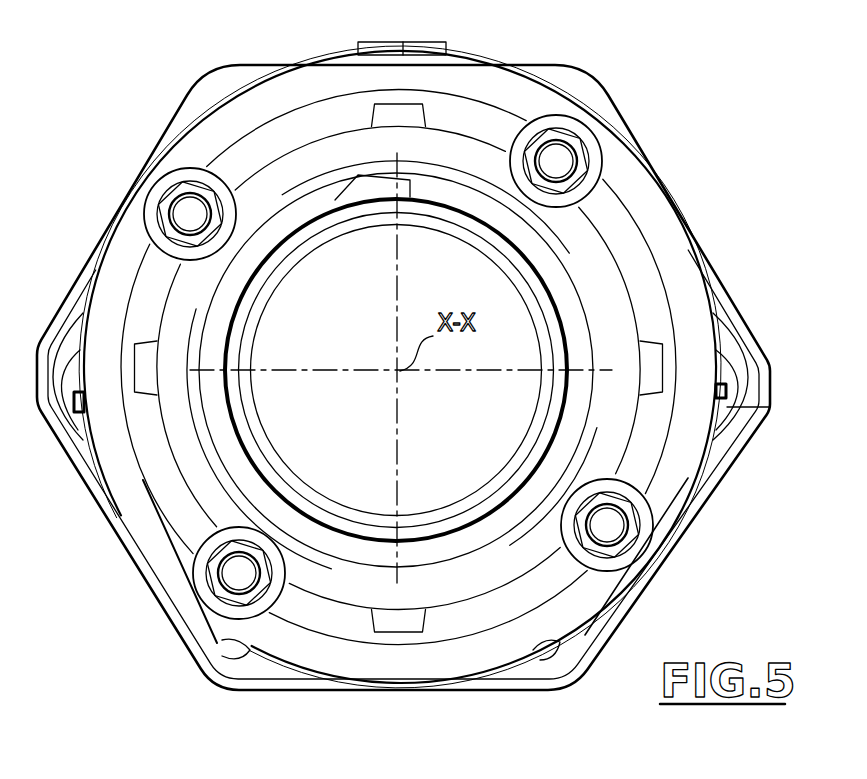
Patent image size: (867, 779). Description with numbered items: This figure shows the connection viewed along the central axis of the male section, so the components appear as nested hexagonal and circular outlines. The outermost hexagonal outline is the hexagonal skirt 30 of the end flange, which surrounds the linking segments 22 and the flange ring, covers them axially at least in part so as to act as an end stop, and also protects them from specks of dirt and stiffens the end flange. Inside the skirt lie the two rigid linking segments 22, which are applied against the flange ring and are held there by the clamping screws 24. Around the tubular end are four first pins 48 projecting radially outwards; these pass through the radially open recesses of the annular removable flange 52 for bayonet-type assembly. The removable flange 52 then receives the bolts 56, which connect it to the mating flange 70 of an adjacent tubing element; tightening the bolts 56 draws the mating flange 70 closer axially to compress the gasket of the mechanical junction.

The linking segments 22 is at (207, 636).
The clamping screws 24 is at (230, 675).
The hexagonal skirt 30 is at (723, 460).
The first pins 48 is at (410, 117).
The removable flange 52 is at (517, 97).
The bolts 56 is at (190, 213).
The mating flange 70 is at (607, 300).